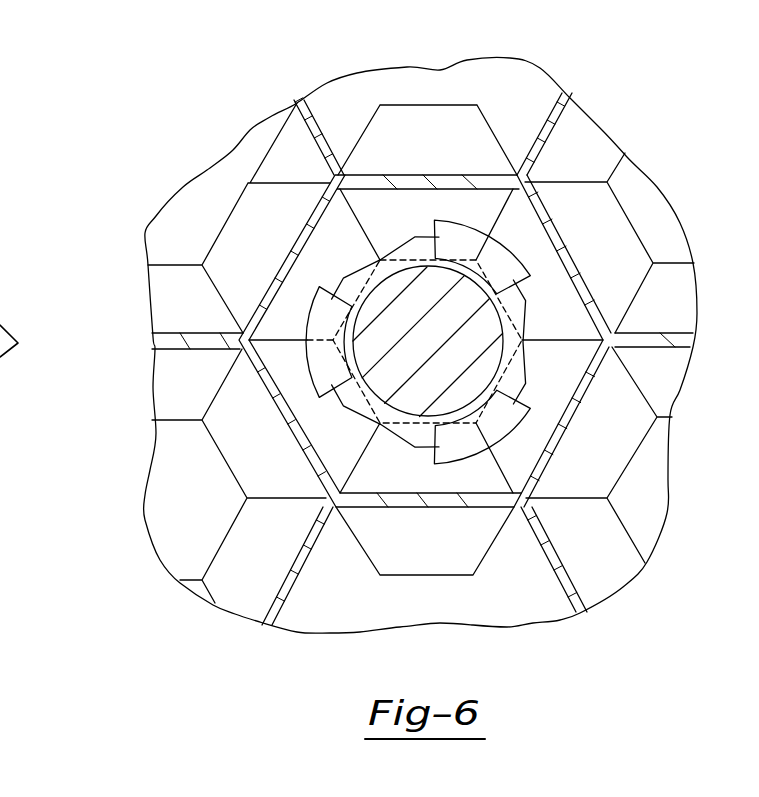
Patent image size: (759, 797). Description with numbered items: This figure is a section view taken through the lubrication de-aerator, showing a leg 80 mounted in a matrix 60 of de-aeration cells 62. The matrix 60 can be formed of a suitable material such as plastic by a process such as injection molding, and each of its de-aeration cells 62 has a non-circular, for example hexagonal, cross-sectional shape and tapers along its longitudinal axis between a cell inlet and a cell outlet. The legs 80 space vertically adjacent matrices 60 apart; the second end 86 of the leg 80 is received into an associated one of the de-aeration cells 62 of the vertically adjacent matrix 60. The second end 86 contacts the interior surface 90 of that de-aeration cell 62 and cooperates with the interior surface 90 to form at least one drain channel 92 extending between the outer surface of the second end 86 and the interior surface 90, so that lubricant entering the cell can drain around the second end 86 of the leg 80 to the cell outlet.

The matrix 60 is at (630, 117).
The de-aeration cells 62 is at (247, 240).
The leg 80 is at (437, 392).
The second end 86 is at (457, 243).
The interior surface 90 is at (322, 260).
The drain channel 92 is at (380, 258).